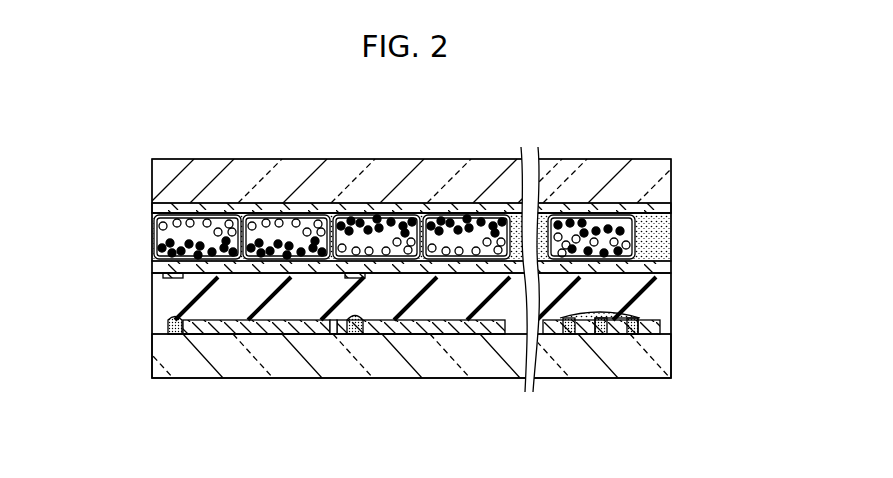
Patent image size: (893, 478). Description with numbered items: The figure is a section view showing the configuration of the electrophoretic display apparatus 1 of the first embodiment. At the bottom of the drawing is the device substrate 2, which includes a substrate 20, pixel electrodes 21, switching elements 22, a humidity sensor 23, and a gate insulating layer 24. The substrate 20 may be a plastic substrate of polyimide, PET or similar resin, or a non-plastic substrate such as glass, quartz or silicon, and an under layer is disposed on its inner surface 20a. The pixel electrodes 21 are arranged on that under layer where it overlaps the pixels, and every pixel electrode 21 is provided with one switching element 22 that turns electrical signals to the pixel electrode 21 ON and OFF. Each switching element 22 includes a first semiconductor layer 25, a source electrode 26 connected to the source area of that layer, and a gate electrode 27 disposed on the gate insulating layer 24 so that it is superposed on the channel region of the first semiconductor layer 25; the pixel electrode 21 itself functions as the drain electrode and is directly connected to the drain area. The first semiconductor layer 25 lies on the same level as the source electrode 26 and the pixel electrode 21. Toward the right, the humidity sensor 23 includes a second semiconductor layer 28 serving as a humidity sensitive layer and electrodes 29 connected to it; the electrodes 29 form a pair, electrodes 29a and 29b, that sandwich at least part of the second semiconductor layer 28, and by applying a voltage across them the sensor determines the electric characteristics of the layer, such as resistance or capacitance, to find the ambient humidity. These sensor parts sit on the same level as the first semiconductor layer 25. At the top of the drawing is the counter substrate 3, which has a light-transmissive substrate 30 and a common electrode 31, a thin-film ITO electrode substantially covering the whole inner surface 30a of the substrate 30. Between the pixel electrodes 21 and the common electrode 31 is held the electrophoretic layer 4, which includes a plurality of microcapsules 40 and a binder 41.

The electrophoretic display apparatus 1 is at (694, 135).
The device substrate 2 is at (676, 266).
The counter substrate 3 is at (676, 159).
The electrophoretic layer 4 is at (676, 209).
The substrate 20 is at (158, 365).
The inner surface 20a is at (262, 334).
The pixel electrode 21 is at (222, 334).
The switching element 22 is at (173, 337).
The humidity sensor 23 is at (632, 338).
The gate insulating layer 24 is at (165, 289).
The first semiconductor layer 25 is at (165, 318).
The source electrode 26 is at (334, 337).
The gate electrode 27 is at (362, 272).
The second semiconductor layer 28 is at (577, 334).
The electrodes 29 is at (615, 334).
The electrode 29a is at (601, 326).
The electrode 29b is at (632, 326).
The substrate 30 is at (152, 174).
The inner surface 30a is at (273, 196).
The common electrode 31 is at (160, 210).
The microcapsule 40 is at (218, 212).
The binder 41 is at (545, 212).